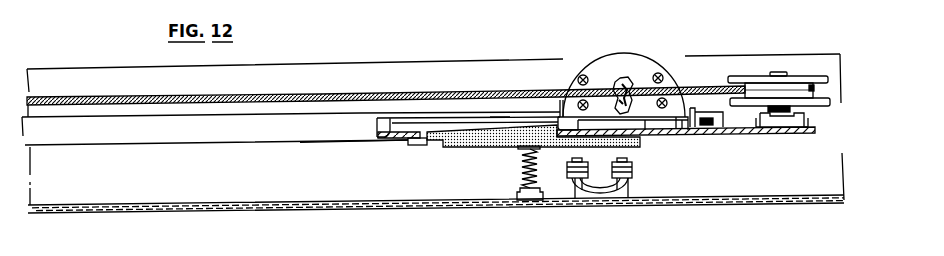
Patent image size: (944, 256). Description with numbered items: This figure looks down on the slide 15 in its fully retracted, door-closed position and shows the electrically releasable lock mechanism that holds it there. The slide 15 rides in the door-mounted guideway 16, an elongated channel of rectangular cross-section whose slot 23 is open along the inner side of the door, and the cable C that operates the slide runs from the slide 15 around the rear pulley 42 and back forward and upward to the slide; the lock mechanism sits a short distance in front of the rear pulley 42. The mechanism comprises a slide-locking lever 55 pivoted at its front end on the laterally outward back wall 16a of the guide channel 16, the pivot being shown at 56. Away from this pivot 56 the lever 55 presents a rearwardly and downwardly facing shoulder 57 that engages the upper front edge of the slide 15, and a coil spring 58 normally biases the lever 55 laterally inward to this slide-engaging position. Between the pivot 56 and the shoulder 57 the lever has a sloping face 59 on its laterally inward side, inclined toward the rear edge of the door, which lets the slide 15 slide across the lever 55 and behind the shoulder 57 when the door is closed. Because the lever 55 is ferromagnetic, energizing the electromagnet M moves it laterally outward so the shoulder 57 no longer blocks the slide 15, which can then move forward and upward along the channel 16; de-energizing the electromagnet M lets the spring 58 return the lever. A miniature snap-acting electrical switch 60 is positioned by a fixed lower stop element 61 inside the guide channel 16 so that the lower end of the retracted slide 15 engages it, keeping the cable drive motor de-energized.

The cable C is at (302, 97).
The slide 15 is at (638, 68).
The guideway 16 is at (248, 133).
The laterally outward back wall of guide channel 16a is at (322, 145).
The slot 23 is at (422, 117).
The rear pulley 42 is at (806, 76).
The slide-locking lever 55 is at (463, 147).
The pivot 56 is at (424, 145).
The shoulder 57 is at (566, 100).
The coil spring 58 is at (522, 175).
The sloping face 59 is at (498, 117).
The snap-acting electrical switch 60 is at (694, 130).
The lower stop element 61 is at (707, 125).
The electromagnet M is at (630, 180).